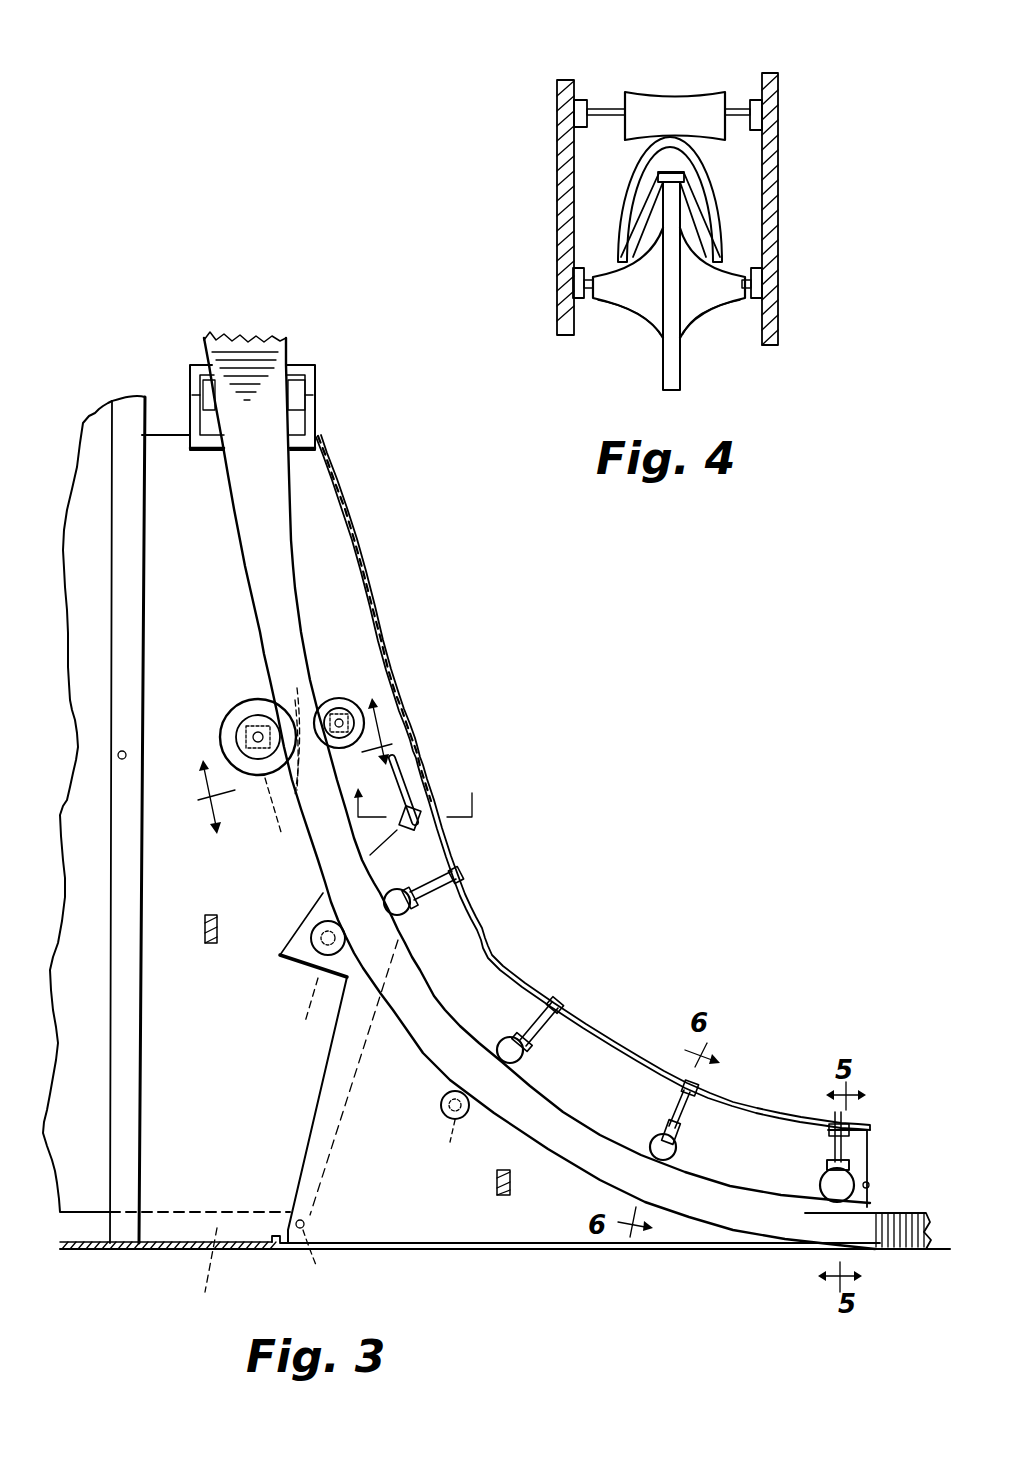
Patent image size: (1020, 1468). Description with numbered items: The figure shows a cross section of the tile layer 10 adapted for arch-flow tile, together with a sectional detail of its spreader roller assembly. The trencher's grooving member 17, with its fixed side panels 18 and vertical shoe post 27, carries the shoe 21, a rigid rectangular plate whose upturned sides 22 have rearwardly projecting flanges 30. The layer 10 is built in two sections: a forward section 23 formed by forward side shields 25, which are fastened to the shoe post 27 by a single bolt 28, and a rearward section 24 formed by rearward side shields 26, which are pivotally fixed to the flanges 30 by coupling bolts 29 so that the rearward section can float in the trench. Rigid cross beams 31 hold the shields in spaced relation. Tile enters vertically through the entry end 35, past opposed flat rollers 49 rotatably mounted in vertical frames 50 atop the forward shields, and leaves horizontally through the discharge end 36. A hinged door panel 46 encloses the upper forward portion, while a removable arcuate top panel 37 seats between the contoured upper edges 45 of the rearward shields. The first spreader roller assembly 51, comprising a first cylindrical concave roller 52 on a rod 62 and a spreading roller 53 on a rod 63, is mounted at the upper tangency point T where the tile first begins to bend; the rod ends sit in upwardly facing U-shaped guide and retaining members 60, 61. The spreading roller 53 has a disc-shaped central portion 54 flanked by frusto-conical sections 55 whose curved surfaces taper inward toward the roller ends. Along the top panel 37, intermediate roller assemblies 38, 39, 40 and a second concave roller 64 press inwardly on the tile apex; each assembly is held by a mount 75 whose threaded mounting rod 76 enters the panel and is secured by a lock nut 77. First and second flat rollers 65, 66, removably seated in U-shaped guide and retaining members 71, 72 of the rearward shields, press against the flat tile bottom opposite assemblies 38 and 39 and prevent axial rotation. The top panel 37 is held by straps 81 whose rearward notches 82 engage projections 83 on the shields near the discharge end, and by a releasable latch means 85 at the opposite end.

In FIG. 3, the tile layer 10 is at (664, 776).
In FIG. 3, the grooving member 17 is at (89, 485).
In FIG. 3, the side panels 18 is at (78, 676).
In FIG. 3, the shoe 21 is at (86, 1250).
In FIG. 3, the upturned sides 22 is at (207, 1273).
In FIG. 3, the forward section 23 is at (191, 1158).
In FIG. 3, the rearward section 24 is at (456, 1216).
In FIG. 3, the forward side shields 25 is at (213, 1042).
In FIG. 3, the rearward side shields 26 is at (413, 1194).
In FIG. 3, the shoe post 27 is at (110, 893).
In FIG. 3, the bolt 28 is at (118, 760).
In FIG. 3, the coupling bolts 29 is at (306, 1224).
In FIG. 3, the flanges 30 is at (327, 1263).
In FIG. 3, the cross beams 31 is at (210, 915).
In FIG. 3, the entry end 35 is at (338, 423).
In FIG. 3, the discharge end 36 is at (893, 1122).
In FIG. 3, the top panel 37 is at (602, 1043).
In FIG. 3, the intermediate roller assembly 38 is at (428, 904).
In FIG. 3, the intermediate roller assembly 39 is at (533, 1048).
In FIG. 3, the intermediate roller assembly 40 is at (700, 1138).
In FIG. 3, the upper edges 45 is at (523, 967).
In FIG. 3, the door panel 46 is at (386, 628).
In FIG. 3, the flat rollers 49 is at (316, 373).
In FIG. 3, the frames 50 is at (314, 412).
In FIG. 3, the first spreader roller assembly 51 is at (272, 808).
In FIG. 4, the first spreader roller assembly 51 is at (622, 384).
In FIG. 3, the first cylindrical concave roller 52 is at (337, 710).
In FIG. 4, the first cylindrical concave roller 52 is at (683, 102).
In FIG. 3, the spreading roller 53 is at (227, 716).
In FIG. 4, the spreading roller 53 is at (681, 382).
In FIG. 4, the central portion 54 is at (665, 312).
In FIG. 4, the frusto-conical sections 55 is at (622, 306).
In FIG. 3, the guide and retaining member 60 is at (312, 748).
In FIG. 4, the guide and retaining member 60 is at (743, 137).
In FIG. 3, the guide and retaining member 61 is at (283, 814).
In FIG. 4, the guide and retaining member 61 is at (776, 316).
In FIG. 3, the rod 62 is at (330, 698).
In FIG. 4, the rod 62 is at (742, 108).
In FIG. 3, the rod 63 is at (259, 736).
In FIG. 4, the rod 63 is at (573, 285).
In FIG. 3, the second concave roller 64 is at (832, 1202).
In FIG. 3, the first flat roller 65 is at (311, 948).
In FIG. 3, the second flat roller 66 is at (440, 1108).
In FIG. 3, the guide and retaining member 71 is at (304, 1007).
In FIG. 3, the guide and retaining member 72 is at (465, 1142).
In FIG. 3, the mount 75 is at (662, 1117).
In FIG. 3, the threaded mounting rod 76 is at (688, 1112).
In FIG. 3, the lock nut 77 is at (704, 1088).
In FIG. 3, the straps 81 is at (872, 1152).
In FIG. 3, the notch 82 is at (870, 1185).
In FIG. 3, the projection 83 is at (838, 1165).
In FIG. 3, the latch means 85 is at (404, 788).
In FIG. 3, the upper tangency point T is at (410, 708).